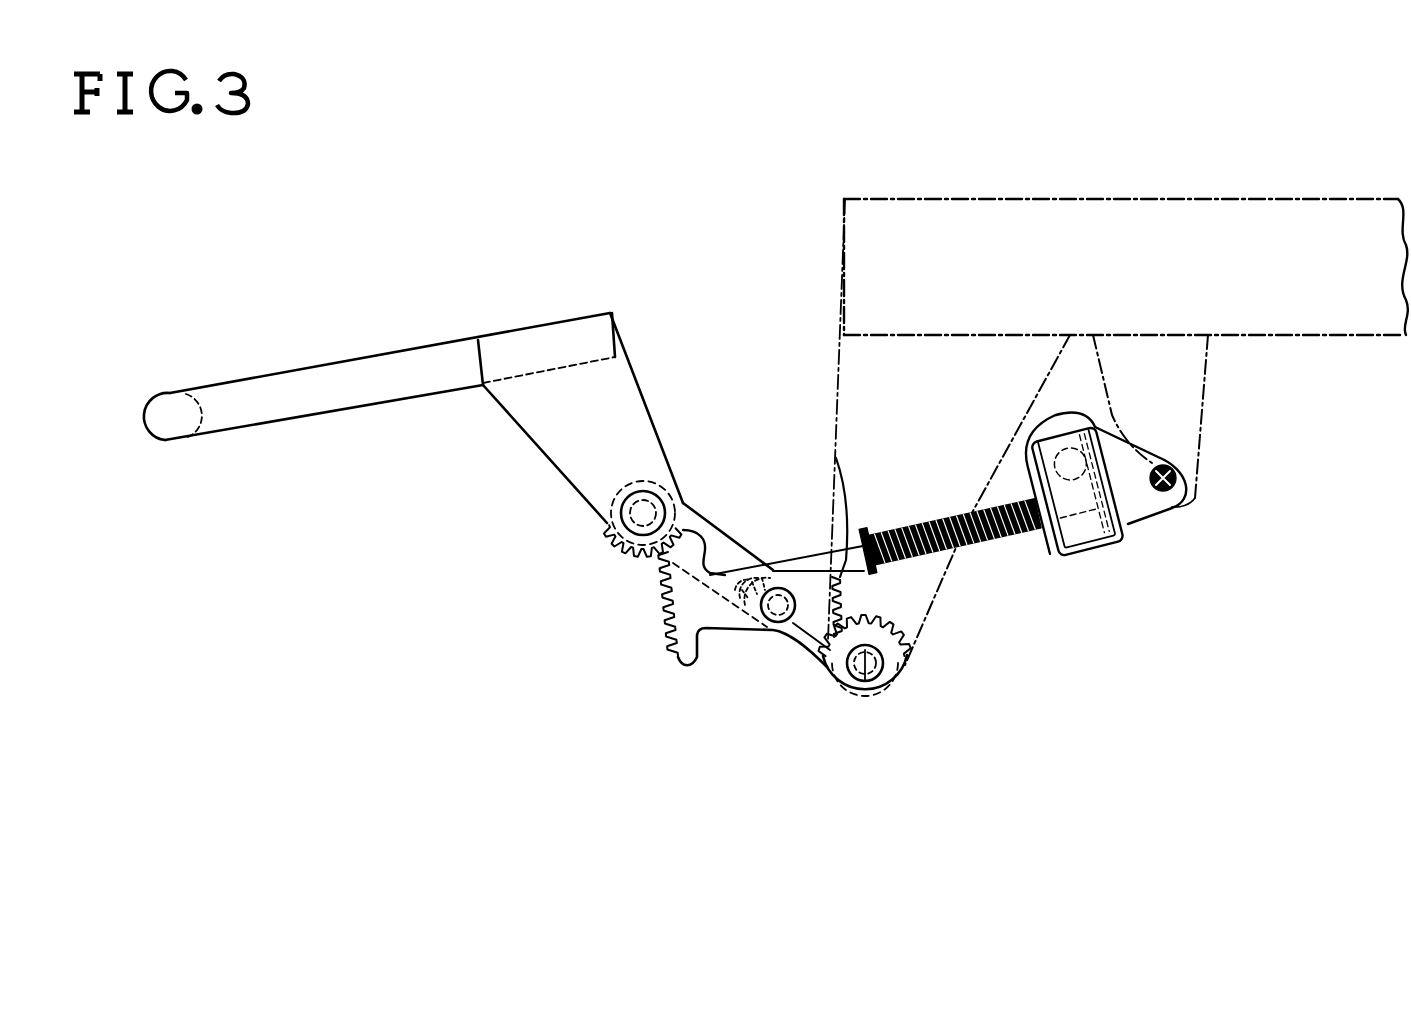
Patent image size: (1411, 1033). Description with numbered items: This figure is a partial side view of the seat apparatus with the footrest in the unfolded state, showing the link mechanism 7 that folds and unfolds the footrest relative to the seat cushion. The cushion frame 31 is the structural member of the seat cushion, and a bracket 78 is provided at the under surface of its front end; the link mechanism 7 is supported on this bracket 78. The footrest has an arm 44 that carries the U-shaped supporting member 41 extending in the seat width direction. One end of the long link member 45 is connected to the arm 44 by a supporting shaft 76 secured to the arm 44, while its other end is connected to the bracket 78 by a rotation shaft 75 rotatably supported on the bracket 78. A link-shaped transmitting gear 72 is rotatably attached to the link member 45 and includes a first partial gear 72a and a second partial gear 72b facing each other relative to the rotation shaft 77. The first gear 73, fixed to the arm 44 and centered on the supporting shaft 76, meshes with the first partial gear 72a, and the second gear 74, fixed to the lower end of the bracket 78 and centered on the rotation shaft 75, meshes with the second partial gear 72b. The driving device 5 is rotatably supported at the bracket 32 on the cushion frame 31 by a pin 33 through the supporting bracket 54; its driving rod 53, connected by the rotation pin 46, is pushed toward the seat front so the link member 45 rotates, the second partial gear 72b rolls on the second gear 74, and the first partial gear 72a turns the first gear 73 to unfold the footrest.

The cushion frame 31 is at (1332, 318).
The bracket 32 is at (1185, 398).
The pin 33 is at (1180, 500).
The supporting member 41 is at (370, 370).
The arm 44 is at (543, 422).
The link member 45 is at (723, 552).
The rotation pin 46 is at (753, 567).
The driving device 5 is at (1100, 580).
The driving rod 53 is at (930, 560).
The supporting bracket 54 is at (1137, 523).
The link mechanism 7 is at (700, 708).
The transmitting gear 72 is at (718, 617).
The first partial gear 72a is at (657, 633).
The second partial gear 72b is at (836, 462).
The first gear 73 is at (610, 478).
The second gear 74 is at (908, 663).
The rotation shaft 75 is at (866, 690).
The supporting shaft 76 is at (635, 518).
The rotation shaft 77 is at (782, 625).
The bracket 78 is at (863, 407).